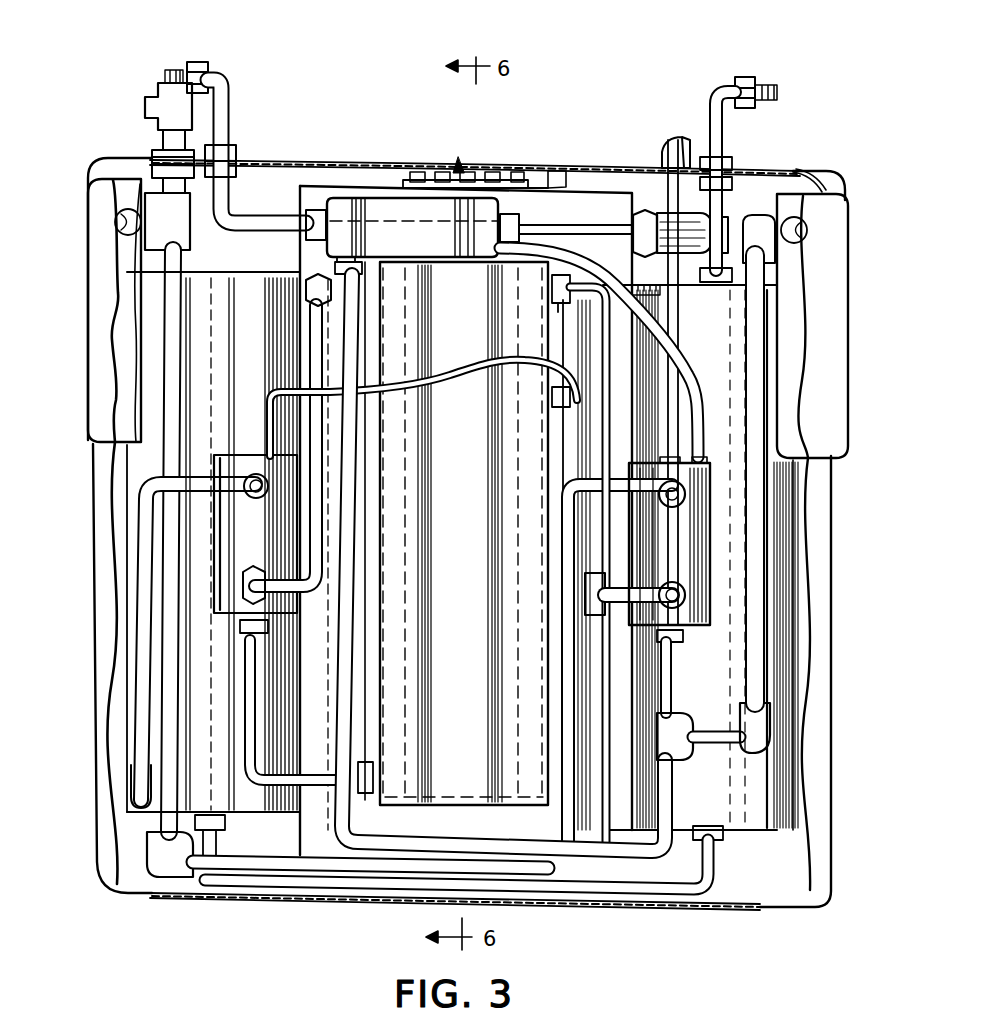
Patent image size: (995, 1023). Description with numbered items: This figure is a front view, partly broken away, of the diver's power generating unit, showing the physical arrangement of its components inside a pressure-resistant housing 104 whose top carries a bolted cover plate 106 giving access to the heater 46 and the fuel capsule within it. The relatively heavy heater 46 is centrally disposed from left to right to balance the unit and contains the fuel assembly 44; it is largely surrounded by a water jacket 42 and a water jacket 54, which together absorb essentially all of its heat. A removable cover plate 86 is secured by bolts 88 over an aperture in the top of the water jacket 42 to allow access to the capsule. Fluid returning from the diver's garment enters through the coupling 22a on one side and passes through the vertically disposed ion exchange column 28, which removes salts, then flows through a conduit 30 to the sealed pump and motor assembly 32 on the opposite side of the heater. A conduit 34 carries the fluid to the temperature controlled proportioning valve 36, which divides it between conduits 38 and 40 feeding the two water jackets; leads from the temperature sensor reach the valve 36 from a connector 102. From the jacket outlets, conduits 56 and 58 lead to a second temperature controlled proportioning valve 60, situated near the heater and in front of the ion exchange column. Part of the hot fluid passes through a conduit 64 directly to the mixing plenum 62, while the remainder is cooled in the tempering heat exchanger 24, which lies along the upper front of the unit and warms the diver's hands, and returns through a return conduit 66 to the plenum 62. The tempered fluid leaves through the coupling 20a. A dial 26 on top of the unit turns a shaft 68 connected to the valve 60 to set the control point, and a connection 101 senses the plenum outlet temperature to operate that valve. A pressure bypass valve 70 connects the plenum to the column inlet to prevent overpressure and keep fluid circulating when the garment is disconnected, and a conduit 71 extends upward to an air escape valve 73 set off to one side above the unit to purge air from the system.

The coupling 20a is at (200, 62).
The coupling 22a is at (736, 82).
The tempering heat exchanger 24 is at (100, 310).
The dial 26 is at (672, 146).
The ion exchange column 28 is at (726, 384).
The conduit 30 is at (594, 892).
The pump and motor assembly 32 is at (250, 368).
The conduit 34 is at (145, 628).
The temperature controlled proportioning valve 36 is at (275, 515).
The conduit 38 is at (262, 540).
The conduit 40 is at (250, 684).
The water jacket 42 is at (328, 197).
The fuel assembly 44 is at (459, 157).
The heater 46 is at (578, 190).
The water jacket 54 is at (400, 320).
The conduit 56 is at (598, 394).
The conduit 58 is at (590, 706).
The temperature controlled proportioning valve 60 is at (682, 558).
The mixing plenum 62 is at (432, 250).
The conduit 64 is at (343, 636).
The return conduit 66 is at (750, 558).
The shaft 68 is at (672, 320).
The pressure bypass valve 70 is at (620, 561).
The conduit 71 is at (176, 312).
The air escape valve 73 is at (162, 103).
The removable cover plate 86 is at (422, 170).
The bolts 88 is at (500, 172).
The connection 101 is at (620, 352).
The connector 102 is at (445, 378).
The housing 104 is at (306, 904).
The cover plate 106 is at (478, 164).